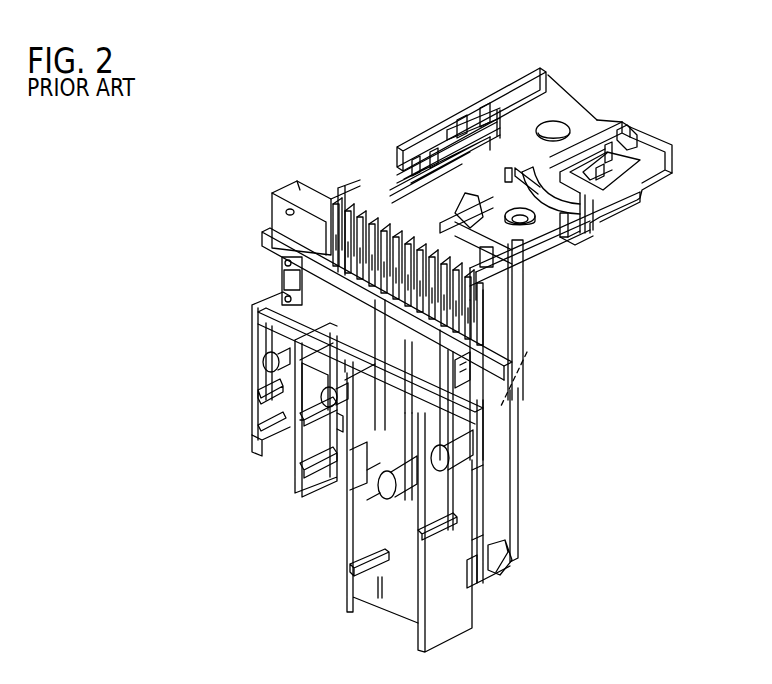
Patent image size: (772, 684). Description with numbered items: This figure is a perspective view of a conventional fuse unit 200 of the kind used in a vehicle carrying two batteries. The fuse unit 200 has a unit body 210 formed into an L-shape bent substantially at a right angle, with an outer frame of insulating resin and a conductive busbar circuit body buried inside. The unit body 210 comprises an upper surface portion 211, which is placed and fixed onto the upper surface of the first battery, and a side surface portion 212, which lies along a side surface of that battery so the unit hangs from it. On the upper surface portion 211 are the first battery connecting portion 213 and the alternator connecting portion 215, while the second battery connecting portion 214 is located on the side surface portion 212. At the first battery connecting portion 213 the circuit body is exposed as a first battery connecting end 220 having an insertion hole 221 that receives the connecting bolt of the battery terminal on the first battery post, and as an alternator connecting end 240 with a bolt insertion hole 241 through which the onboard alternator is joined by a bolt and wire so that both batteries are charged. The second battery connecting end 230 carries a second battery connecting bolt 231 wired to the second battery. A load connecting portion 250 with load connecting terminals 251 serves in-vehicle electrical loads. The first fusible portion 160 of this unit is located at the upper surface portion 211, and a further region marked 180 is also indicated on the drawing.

The fuse unit 200 is at (216, 183).
The unit body 210 is at (322, 160).
The upper surface portion 211 is at (400, 140).
The side surface portion 212 is at (268, 290).
The first battery connecting portion 213 is at (440, 118).
The second battery connecting portion 214 is at (240, 379).
The alternator connecting portion 215 is at (558, 260).
The first battery connecting end 220 is at (593, 122).
The insertion hole 221 is at (553, 128).
The second battery connecting end 230 is at (247, 395).
The second battery connecting bolt 231 is at (263, 359).
The alternator connecting end 240 is at (535, 216).
The bolt insertion hole 241 is at (577, 245).
The load connecting portion 250 is at (517, 525).
The load connecting terminals 251 is at (453, 499).
The first fusible portion 160 is at (607, 167).
The retainer 180 is at (473, 372).